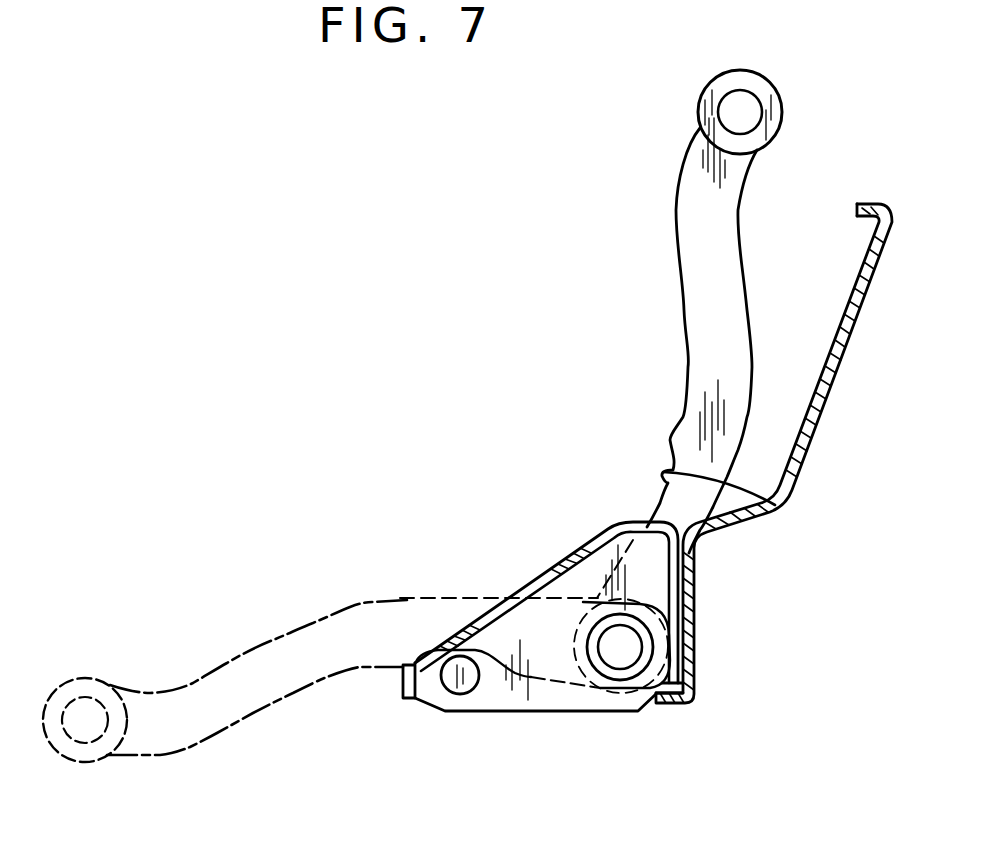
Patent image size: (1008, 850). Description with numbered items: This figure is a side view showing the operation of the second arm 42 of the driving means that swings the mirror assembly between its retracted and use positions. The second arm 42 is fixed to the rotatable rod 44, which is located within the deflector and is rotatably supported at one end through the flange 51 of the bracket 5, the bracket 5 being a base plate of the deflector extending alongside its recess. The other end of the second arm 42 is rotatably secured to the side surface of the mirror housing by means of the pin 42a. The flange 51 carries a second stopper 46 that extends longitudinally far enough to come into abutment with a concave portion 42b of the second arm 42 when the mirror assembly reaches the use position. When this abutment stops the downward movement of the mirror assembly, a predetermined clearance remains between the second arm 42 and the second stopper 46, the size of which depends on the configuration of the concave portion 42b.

The bracket 5 is at (802, 447).
The second arm 42 is at (688, 232).
The pin 42a is at (747, 112).
The concave portion 42b is at (775, 505).
The rotatable rod 44 is at (613, 668).
The second stopper 46 is at (455, 682).
The flange 51 is at (541, 570).